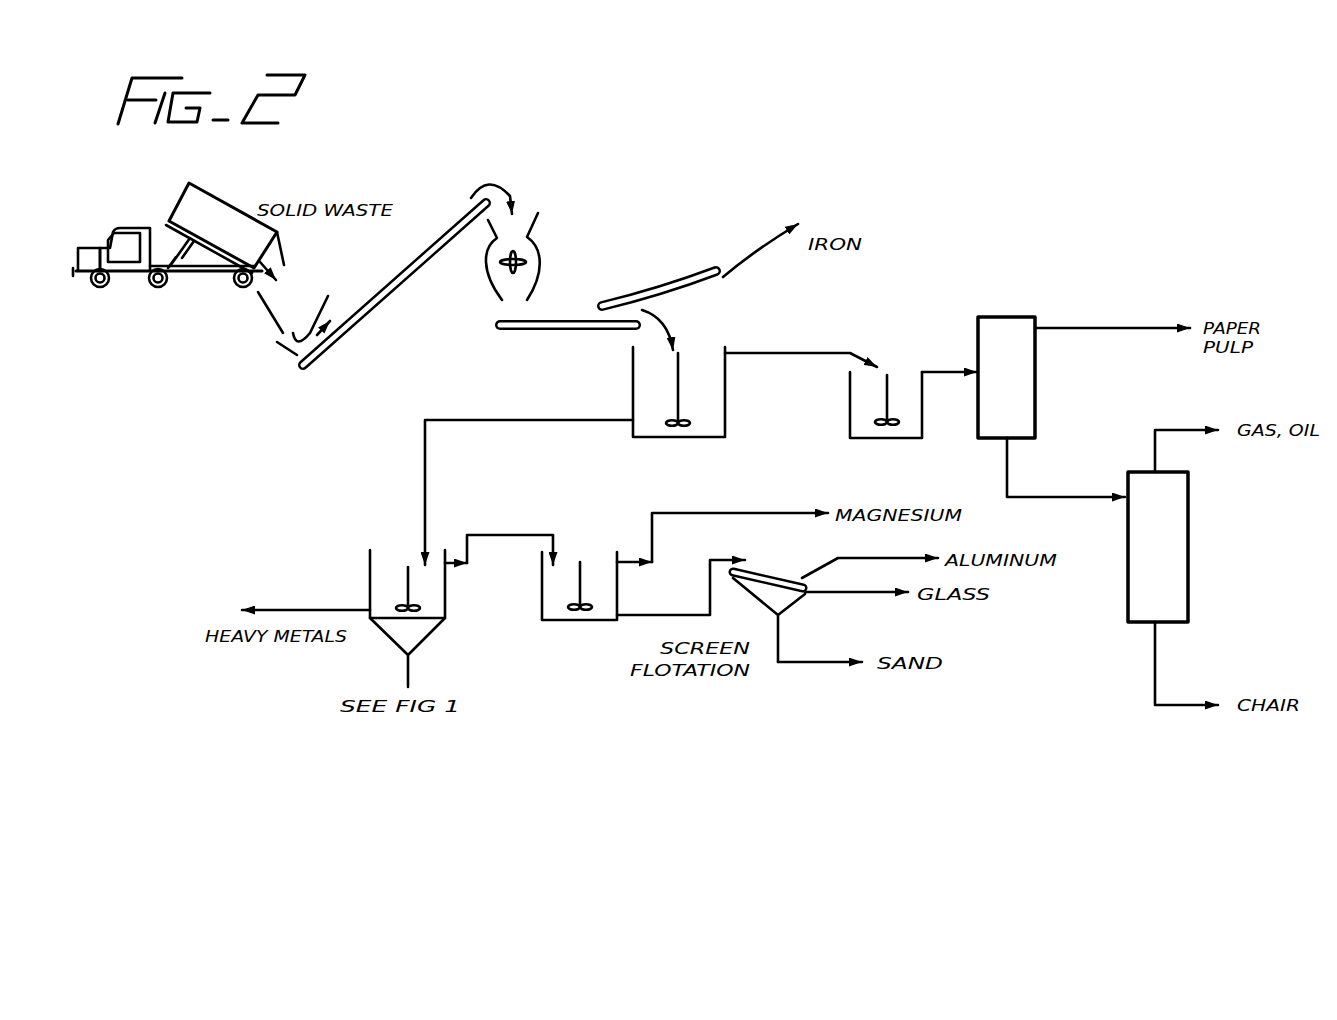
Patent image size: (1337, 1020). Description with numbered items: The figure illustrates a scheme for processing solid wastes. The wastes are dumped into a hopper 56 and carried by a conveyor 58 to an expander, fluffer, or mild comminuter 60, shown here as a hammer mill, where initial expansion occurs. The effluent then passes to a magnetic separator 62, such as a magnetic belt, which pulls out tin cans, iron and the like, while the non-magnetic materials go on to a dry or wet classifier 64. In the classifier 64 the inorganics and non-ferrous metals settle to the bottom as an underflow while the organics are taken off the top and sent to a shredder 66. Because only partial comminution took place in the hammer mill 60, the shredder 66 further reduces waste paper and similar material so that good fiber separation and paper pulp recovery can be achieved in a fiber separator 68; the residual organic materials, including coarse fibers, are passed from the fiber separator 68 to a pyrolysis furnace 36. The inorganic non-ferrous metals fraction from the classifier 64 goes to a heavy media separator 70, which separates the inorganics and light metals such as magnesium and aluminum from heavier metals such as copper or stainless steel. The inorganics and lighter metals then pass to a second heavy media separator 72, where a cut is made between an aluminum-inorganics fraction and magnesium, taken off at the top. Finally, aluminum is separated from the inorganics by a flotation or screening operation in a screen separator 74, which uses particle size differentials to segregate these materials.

The pyrolysis furnace 36 is at (1188, 517).
The hopper 56 is at (328, 296).
The conveyor 58 is at (347, 337).
The mild comminuter 60 is at (544, 258).
The magnetic separator 62 is at (683, 292).
The classifier 64 is at (725, 410).
The shredder 66 is at (922, 412).
The fiber separator 68 is at (1035, 418).
The heavy media separator 70 is at (445, 607).
The heavy media separator 72 is at (617, 588).
The screen separator 74 is at (790, 600).